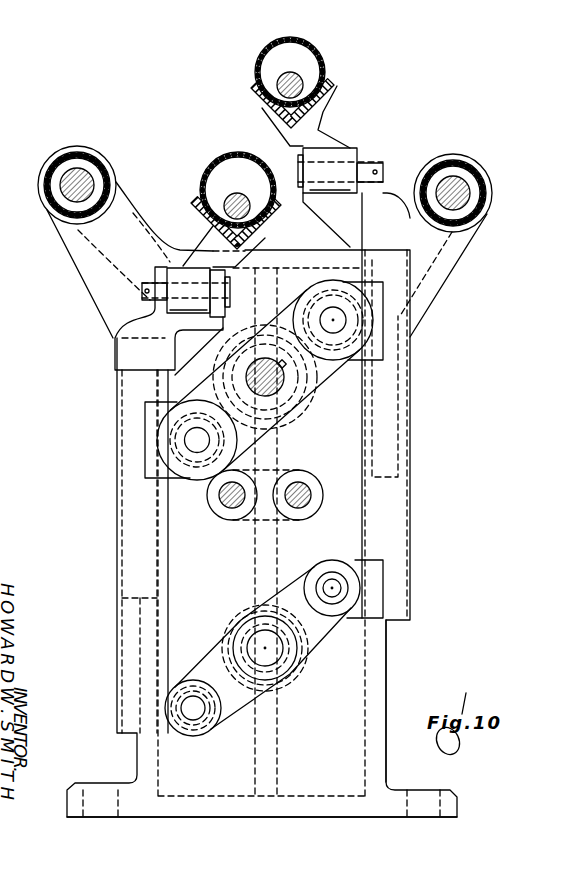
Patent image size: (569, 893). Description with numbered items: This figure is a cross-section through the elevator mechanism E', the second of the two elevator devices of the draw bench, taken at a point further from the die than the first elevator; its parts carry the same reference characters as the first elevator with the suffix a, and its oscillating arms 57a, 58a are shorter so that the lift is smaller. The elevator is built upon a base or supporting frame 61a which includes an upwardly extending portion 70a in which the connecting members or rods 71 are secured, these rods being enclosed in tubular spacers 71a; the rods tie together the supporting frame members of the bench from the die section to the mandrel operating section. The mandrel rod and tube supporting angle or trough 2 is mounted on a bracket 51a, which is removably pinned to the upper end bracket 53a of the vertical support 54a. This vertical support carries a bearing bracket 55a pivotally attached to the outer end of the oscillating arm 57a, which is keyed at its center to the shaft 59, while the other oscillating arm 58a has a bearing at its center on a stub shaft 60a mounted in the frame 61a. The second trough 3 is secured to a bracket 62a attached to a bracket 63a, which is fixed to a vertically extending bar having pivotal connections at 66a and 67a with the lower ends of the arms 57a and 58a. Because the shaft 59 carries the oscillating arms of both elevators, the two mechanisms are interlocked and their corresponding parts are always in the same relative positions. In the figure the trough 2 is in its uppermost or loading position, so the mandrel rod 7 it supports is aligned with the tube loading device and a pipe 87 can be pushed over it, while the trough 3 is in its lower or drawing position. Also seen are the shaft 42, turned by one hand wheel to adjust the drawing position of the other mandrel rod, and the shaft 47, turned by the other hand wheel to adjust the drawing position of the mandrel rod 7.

The mandrel rod 7 is at (283, 78).
The pipe 87 is at (322, 53).
The trough 2 is at (340, 84).
The trough 3 is at (192, 197).
The bracket 51a is at (320, 137).
The upper end bracket 53a is at (390, 200).
The vertical support 54a is at (411, 372).
The bearing bracket 55a is at (377, 293).
The oscillating arm 57a is at (319, 378).
The shaft 59 is at (273, 390).
The bracket 62a is at (210, 236).
The bracket 63a is at (135, 320).
The pivotal connection 66a is at (197, 442).
The upwardly extending portion 70a is at (88, 247).
The connecting rod 71 is at (58, 184).
The tubular spacer 71a is at (108, 158).
The shaft 47 is at (228, 507).
The shaft 42 is at (303, 500).
The oscillating arm 58a is at (320, 635).
The stub shaft 60a is at (273, 655).
The pivotal connection 67a is at (193, 710).
The supporting frame 61a is at (347, 758).
The elevator mechanism E' is at (412, 701).